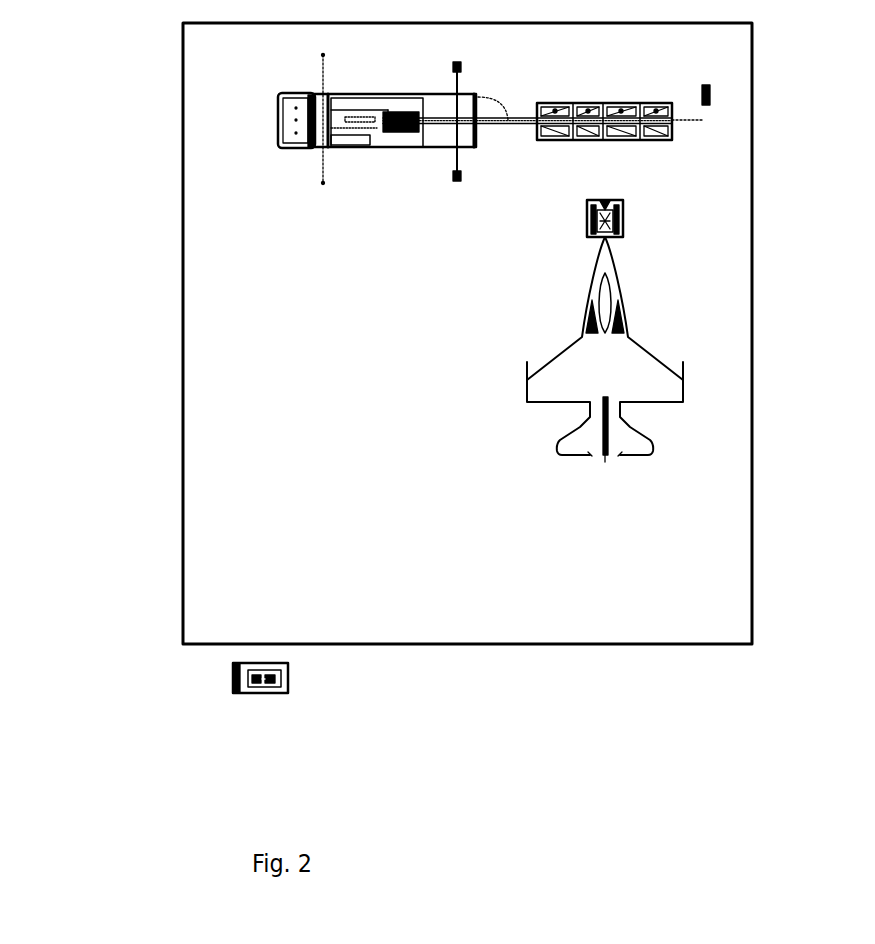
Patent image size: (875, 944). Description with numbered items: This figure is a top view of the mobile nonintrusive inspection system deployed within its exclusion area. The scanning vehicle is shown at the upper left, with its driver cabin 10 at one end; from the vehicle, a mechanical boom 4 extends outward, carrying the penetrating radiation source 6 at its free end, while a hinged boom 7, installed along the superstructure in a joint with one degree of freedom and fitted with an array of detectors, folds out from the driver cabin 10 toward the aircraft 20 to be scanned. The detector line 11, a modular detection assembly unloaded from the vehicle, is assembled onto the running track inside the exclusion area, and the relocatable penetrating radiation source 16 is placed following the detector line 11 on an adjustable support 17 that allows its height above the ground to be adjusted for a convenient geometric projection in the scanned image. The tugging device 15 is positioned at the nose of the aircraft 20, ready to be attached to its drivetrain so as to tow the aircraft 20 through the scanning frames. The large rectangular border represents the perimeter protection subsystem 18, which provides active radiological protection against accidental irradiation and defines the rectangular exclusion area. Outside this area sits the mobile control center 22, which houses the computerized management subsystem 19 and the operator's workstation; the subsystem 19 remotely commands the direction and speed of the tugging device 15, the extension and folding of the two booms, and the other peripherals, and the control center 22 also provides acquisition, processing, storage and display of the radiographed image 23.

The mechanical boom 4 is at (509, 125).
The penetrating radiation source 6 is at (600, 116).
The hinged boom 7 is at (484, 95).
The driver cabin 10 is at (292, 151).
The detector line 11 is at (616, 92).
The tugging device 15 is at (625, 214).
The relocatable penetrating radiation source 16 is at (710, 106).
The adjustable support 17 is at (708, 84).
The perimeter protection subsystem 18 is at (755, 641).
The computerized management subsystem 19 is at (194, 680).
The aircraft 20 is at (553, 322).
The mobile control center 22 is at (230, 672).
The radiographed image 23 is at (259, 696).